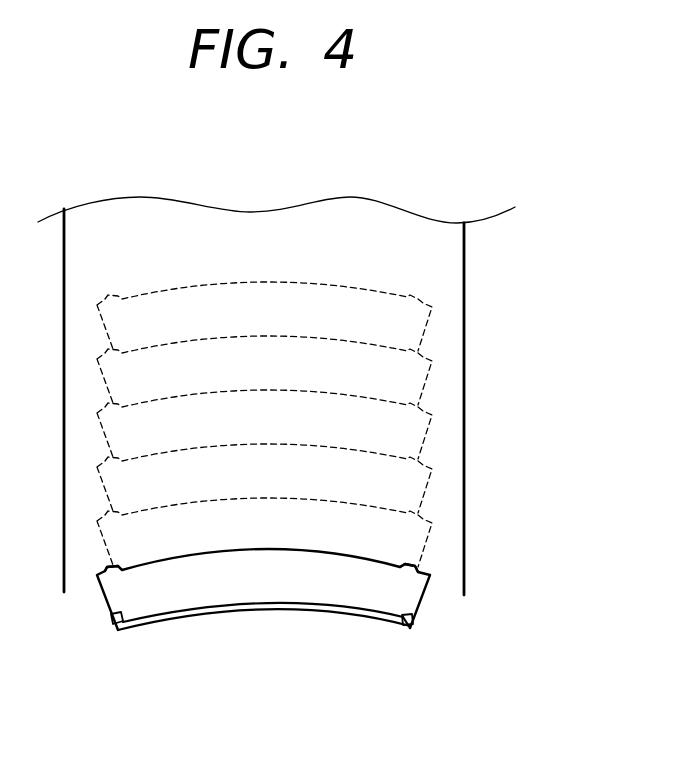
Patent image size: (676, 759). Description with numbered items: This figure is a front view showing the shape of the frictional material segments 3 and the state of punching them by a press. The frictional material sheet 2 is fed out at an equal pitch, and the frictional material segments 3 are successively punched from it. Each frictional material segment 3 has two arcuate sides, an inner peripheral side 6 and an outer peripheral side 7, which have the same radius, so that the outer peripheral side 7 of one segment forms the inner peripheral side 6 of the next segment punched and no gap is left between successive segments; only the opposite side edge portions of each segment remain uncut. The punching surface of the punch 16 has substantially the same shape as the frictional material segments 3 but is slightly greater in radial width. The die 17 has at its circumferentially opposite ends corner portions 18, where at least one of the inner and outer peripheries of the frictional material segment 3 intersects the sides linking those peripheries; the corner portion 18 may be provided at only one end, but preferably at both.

The frictional material sheet 2 is at (452, 167).
The frictional material segment 3 is at (115, 597).
The inner peripheral side 6 is at (343, 608).
The outer peripheral side 7 is at (411, 563).
The punch 16 is at (411, 629).
The die 17 is at (187, 618).
The corner portion 18 is at (118, 633).